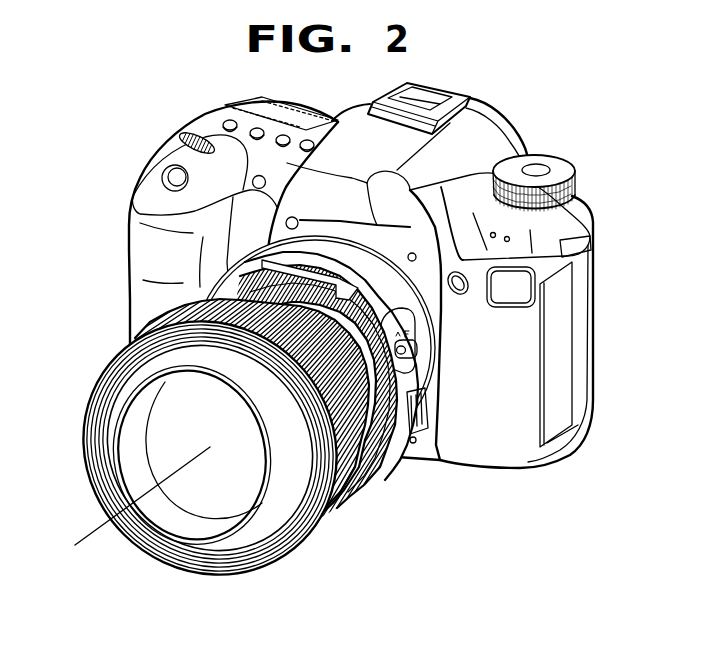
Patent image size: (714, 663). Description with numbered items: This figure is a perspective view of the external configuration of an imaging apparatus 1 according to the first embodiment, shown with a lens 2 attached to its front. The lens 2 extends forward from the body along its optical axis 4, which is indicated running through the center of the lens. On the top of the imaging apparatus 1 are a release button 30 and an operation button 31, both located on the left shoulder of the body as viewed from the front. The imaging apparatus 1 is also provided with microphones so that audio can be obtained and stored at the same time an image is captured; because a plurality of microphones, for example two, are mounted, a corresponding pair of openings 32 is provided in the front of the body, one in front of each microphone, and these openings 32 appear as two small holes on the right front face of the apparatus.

The imaging apparatus 1 is at (522, 130).
The lens 2 is at (151, 550).
The optical axis 4 is at (90, 525).
The release button 30 is at (170, 178).
The operation button 31 is at (200, 138).
The opening 32 is at (516, 242).